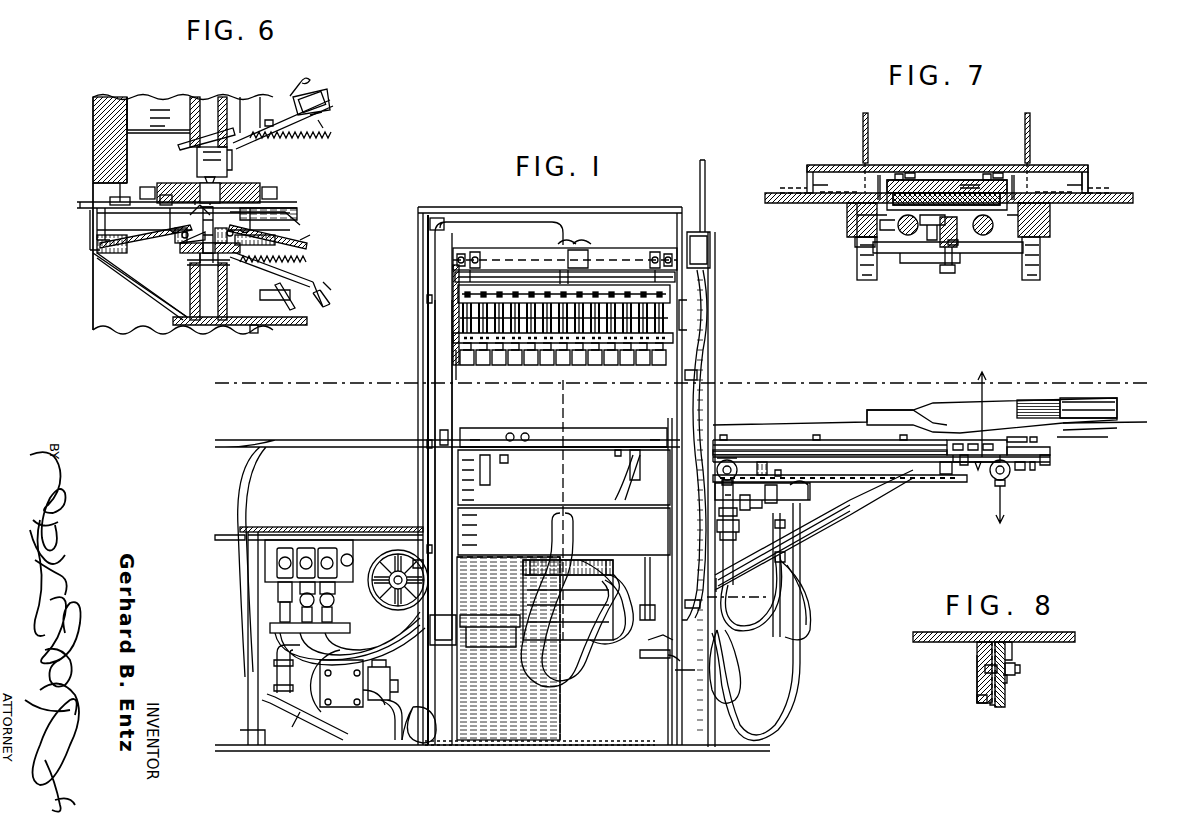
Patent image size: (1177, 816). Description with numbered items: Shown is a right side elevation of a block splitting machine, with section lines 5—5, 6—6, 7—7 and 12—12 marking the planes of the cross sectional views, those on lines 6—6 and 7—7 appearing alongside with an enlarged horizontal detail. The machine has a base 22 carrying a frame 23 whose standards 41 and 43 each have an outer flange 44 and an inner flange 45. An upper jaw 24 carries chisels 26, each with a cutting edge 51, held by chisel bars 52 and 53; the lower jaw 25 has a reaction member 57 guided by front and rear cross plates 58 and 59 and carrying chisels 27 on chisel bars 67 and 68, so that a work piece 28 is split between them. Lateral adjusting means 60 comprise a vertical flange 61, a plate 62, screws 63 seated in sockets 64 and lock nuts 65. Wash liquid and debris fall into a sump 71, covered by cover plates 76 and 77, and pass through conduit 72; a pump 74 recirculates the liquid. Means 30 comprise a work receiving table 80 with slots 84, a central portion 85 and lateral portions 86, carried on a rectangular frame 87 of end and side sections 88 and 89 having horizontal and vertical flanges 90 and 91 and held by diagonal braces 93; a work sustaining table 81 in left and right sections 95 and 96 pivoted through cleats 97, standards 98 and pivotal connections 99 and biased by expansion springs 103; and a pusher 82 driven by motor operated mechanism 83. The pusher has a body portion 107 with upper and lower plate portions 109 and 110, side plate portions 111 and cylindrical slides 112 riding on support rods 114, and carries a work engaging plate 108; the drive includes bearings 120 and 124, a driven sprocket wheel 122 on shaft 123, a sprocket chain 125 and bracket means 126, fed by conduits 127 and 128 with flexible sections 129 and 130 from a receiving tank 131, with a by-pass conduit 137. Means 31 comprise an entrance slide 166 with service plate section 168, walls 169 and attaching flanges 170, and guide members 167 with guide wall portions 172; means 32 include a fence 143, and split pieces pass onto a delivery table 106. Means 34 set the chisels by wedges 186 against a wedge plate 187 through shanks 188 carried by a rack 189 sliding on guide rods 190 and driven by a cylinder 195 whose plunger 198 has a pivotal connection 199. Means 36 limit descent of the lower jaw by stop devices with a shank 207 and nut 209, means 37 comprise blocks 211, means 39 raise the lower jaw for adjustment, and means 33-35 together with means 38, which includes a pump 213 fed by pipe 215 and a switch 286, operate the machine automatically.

In FIG. 6, the section line 5— 5 is at (237, 387).
In FIG. 1, the section line 6— 6 is at (546, 245).
In FIG. 1, the section line 7— 7 is at (991, 452).
In FIG. 1, the section line 12— 12 is at (388, 595).
In FIG. 1, the base 22 is at (707, 747).
In FIG. 1, the frame 23 is at (420, 240).
In FIG. 1, the upper work splitting jaw 24 is at (630, 243).
In FIG. 1, the lower work splitting jaw 25 is at (604, 490).
In FIG. 6, the upper chisels 26 is at (205, 179).
In FIG. 1, the upper chisels 26 is at (520, 357).
In FIG. 6, the lower chisels 27 is at (204, 242).
In FIG. 6, the work pieces 28 is at (230, 188).
In FIG. 1, the work moving and supporting means 30 is at (945, 410).
In FIG. 1, the feeding and guiding means 31 is at (1055, 399).
In FIG. 1, the work guiding and retaining means 32 is at (580, 422).
In FIG. 1, the chisel engaging, chisel setting and jaw moving means 33-35 is at (525, 610).
In FIG. 6, the chisel setting means 34 is at (315, 90).
In FIG. 1, the chisel setting means 34 is at (455, 320).
In FIG. 1, the lower jaw descent limiting means 36 is at (658, 668).
In FIG. 1, the lower jaw rise limiting means 37 is at (455, 345).
In FIG. 1, the automatic operating means 38 is at (268, 605).
In FIG. 1, the lower jaw raising means 39 is at (240, 540).
In FIG. 1, the front standard 41 is at (420, 428).
In FIG. 8, the front standard 41 is at (978, 705).
In FIG. 6, the rear standard 43 is at (108, 158).
In FIG. 1, the rear standard 43 is at (704, 333).
In FIG. 1, the outer flange 44 is at (463, 703).
In FIG. 8, the outer flange 44 is at (928, 643).
In FIG. 8, the inner flange 45 is at (977, 670).
In FIG. 1, the cutting edge 51 is at (636, 360).
In FIG. 6, the chisel bar 52 is at (197, 152).
In FIG. 6, the chisel bar 53 is at (232, 158).
In FIG. 6, the lower reaction member 57 is at (197, 275).
In FIG. 6, the front cross plate 58 is at (98, 290).
In FIG. 1, the front cross plate 58 is at (452, 528).
In FIG. 1, the rear cross plate 59 is at (676, 422).
In FIG. 8, the lateral adjusting means 60 is at (1002, 708).
In FIG. 8, the vertical flange 61 is at (1008, 652).
In FIG. 8, the plate 62 is at (990, 704).
In FIG. 8, the screw 63 is at (1020, 668).
In FIG. 8, the socket 64 is at (985, 668).
In FIG. 8, the lock nut 65 is at (1007, 672).
In FIG. 6, the chisel bar 67 is at (192, 242).
In FIG. 6, the chisel bar 68 is at (234, 251).
In FIG. 6, the sump 71 is at (145, 298).
In FIG. 6, the conduit 72 is at (252, 345).
In FIG. 1, the conduit 72 is at (648, 557).
In FIG. 1, the pump 74 is at (250, 692).
In FIG. 6, the cover plate 76 is at (98, 280).
In FIG. 6, the cover plate 77 is at (300, 244).
In FIG. 1, the work receiving table 80 is at (847, 440).
In FIG. 1, the work sustaining table 81 is at (550, 457).
In FIG. 1, the pusher 82 is at (1013, 473).
In FIG. 1, the motor operated mechanism 83 is at (777, 475).
In FIG. 7, the longitudinal slots 84 is at (869, 202).
In FIG. 7, the central longitudinal portion 85 is at (943, 193).
In FIG. 7, the lateral portions 86 is at (760, 194).
In FIG. 1, the rectangular frame 87 is at (1052, 447).
In FIG. 1, the end sections 88 is at (1054, 464).
In FIG. 1, the side sections 89 is at (901, 462).
In FIG. 7, the side sections 89 is at (846, 207).
In FIG. 1, the horizontal flange 90 is at (1023, 437).
In FIG. 1, the vertical flange 91 is at (1038, 470).
In FIG. 1, the diagonal braces 93 is at (845, 521).
In FIG. 6, the left table section 95 is at (294, 206).
In FIG. 6, the right table section 96 is at (80, 204).
In FIG. 6, the transverse cleats 97 is at (130, 224).
In FIG. 1, the transverse cleats 97 is at (653, 467).
In FIG. 6, the standard 98 is at (100, 218).
In FIG. 1, the standard 98 is at (600, 512).
In FIG. 6, the pivotal connection 99 is at (103, 212).
In FIG. 1, the expansion spring 103 is at (613, 460).
In FIG. 1, the delivery table 106 is at (234, 440).
In FIG. 1, the pusher body portion 107 is at (965, 462).
In FIG. 7, the pusher body portion 107 is at (855, 253).
In FIG. 1, the work engaging plate 108 is at (933, 427).
In FIG. 7, the work engaging plate 108 is at (895, 180).
In FIG. 7, the upper plate portion 109 is at (964, 180).
In FIG. 7, the lower plate portion 110 is at (965, 246).
In FIG. 7, the side plate portions 111 is at (880, 175).
In FIG. 7, the cylindrical slides 112 is at (902, 230).
In FIG. 1, the support rods 114 is at (1020, 470).
In FIG. 7, the support rods 114 is at (912, 233).
In FIG. 1, the anti-friction bearings 120 is at (727, 467).
In FIG. 1, the driven sprocket wheel 122 is at (978, 470).
In FIG. 7, the driven sprocket wheel 122 is at (950, 276).
In FIG. 7, the transverse shaft 123 is at (970, 246).
In FIG. 7, the anti-friction bearings 124 is at (857, 252).
In FIG. 1, the sprocket chain 125 is at (946, 470).
In FIG. 7, the bracket means 126 is at (947, 247).
In FIG. 1, the conduit 127 is at (807, 600).
In FIG. 1, the conduit 128 is at (798, 664).
In FIG. 1, the flexible section 129 is at (797, 622).
In FIG. 1, the flexible section 130 is at (797, 690).
In FIG. 1, the receiving tank 131 is at (508, 732).
In FIG. 1, the conduit 137 is at (745, 531).
In FIG. 1, the fence 143 is at (470, 437).
In FIG. 1, the entrance slide 166 is at (1142, 426).
In FIG. 7, the entrance slide 166 is at (1084, 172).
In FIG. 1, the guide members 167 is at (1083, 398).
In FIG. 1, the service plate section 168 is at (1143, 418).
In FIG. 7, the service plate section 168 is at (1085, 165).
In FIG. 7, the walls 169 is at (810, 178).
In FIG. 7, the attaching flanges 170 is at (1095, 196).
In FIG. 7, the guide wall portion 172 is at (863, 113).
In FIG. 6, the wedges 186 is at (195, 138).
In FIG. 6, the wedge plate 187 is at (222, 135).
In FIG. 6, the shank 188 is at (323, 116).
In FIG. 6, the rack 189 is at (324, 127).
In FIG. 6, the guide rods 190 is at (263, 120).
In FIG. 6, the cylinder 195 is at (328, 97).
In FIG. 6, the plunger 198 is at (298, 91).
In FIG. 6, the pivotal connection 199 is at (277, 285).
In FIG. 1, the shank 207 is at (745, 620).
In FIG. 1, the nut 209 is at (675, 664).
In FIG. 1, the blocks 211 is at (676, 340).
In FIG. 1, the pump 213 is at (345, 727).
In FIG. 1, the pipe 215 is at (420, 742).
In FIG. 1, the electric switch 286 is at (708, 301).